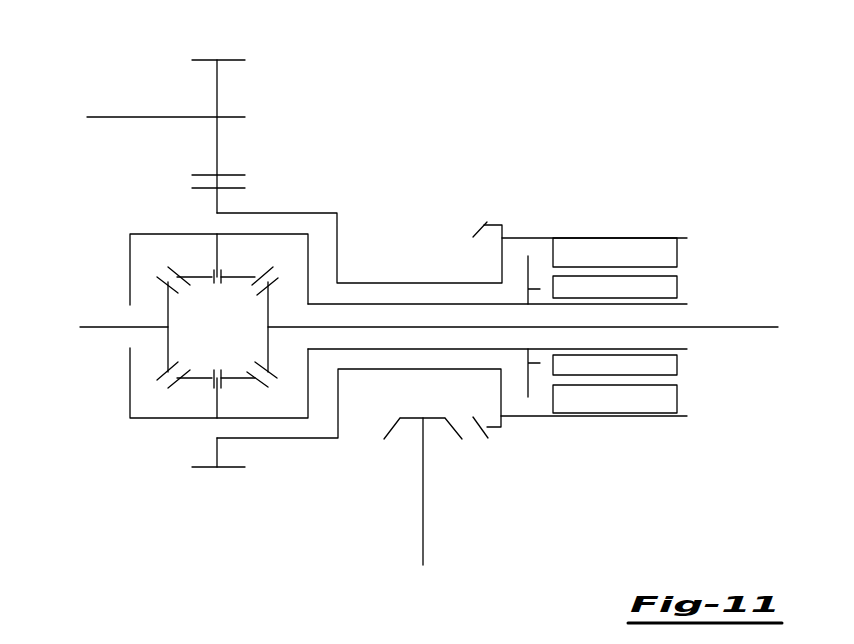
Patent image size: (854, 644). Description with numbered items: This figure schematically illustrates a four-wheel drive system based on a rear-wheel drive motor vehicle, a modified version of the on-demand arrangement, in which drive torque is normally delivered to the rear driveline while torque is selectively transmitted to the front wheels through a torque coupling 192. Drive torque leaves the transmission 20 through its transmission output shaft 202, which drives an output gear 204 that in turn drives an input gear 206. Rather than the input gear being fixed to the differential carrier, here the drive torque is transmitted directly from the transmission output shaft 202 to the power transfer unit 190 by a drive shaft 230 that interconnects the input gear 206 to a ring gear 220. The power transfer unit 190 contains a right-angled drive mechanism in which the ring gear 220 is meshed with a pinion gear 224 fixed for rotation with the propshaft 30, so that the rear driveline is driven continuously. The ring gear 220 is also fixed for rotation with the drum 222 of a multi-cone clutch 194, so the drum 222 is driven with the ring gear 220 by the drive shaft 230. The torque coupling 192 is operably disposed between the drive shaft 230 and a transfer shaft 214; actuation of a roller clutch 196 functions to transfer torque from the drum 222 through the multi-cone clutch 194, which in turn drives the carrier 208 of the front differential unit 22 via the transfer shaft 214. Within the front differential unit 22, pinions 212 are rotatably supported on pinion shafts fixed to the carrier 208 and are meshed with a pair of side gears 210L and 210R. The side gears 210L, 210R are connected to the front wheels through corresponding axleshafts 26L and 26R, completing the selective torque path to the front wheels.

The transmission 20 is at (238, 100).
The front differential unit 22 is at (108, 428).
The left axleshaft 26L is at (97, 326).
The right axleshaft 26R is at (746, 326).
The propshaft 30 is at (424, 486).
The power transfer unit 190 is at (590, 475).
The torque coupling 192 is at (762, 220).
The multi-cone clutch 194 is at (683, 253).
The roller clutch 196 is at (687, 370).
The transmission output shaft 202 is at (100, 117).
The output gear 204 is at (200, 58).
The input gear 206 is at (232, 468).
The carrier 208 is at (147, 234).
The left side gear 210L is at (168, 305).
The right side gear 210R is at (273, 373).
The pinions 212 is at (245, 276).
The transfer shaft 214 is at (380, 283).
The ring gear 220 is at (483, 220).
The drum 222 is at (680, 416).
The pinion gear 224 is at (408, 412).
The drive shaft 230 is at (485, 375).